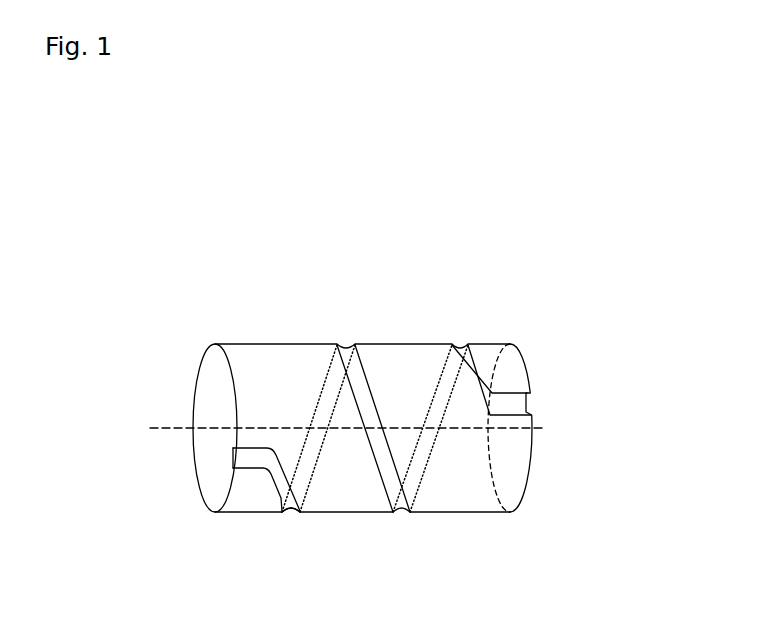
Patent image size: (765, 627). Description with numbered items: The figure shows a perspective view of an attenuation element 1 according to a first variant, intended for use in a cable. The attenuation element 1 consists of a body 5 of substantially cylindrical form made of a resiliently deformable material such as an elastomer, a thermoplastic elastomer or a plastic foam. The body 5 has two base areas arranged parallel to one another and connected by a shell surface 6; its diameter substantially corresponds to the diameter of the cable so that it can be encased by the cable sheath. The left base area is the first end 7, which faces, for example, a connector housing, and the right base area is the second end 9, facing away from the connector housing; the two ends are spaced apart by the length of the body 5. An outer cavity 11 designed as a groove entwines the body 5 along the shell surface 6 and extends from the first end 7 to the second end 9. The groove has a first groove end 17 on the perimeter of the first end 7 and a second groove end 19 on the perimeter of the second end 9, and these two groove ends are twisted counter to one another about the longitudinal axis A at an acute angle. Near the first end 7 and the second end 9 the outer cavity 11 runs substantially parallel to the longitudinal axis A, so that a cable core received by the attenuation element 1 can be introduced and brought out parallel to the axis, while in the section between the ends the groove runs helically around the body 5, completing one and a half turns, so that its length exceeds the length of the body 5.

The attenuation element 1 is at (116, 344).
The body 5 is at (485, 327).
The shell surface 6 is at (292, 344).
The first end 7 is at (198, 455).
The second end 9 is at (512, 378).
The outer cavity 11 is at (278, 501).
The first groove end 17 is at (230, 462).
The second groove end 19 is at (528, 404).
The longitudinal axis A is at (548, 428).